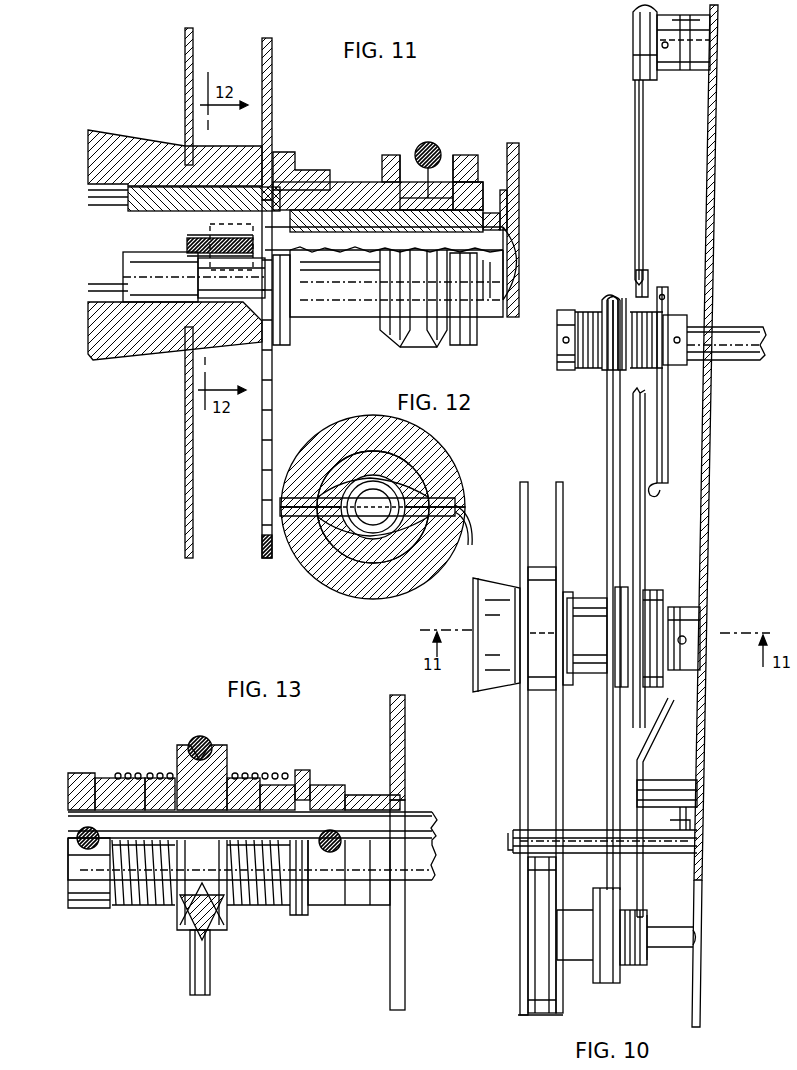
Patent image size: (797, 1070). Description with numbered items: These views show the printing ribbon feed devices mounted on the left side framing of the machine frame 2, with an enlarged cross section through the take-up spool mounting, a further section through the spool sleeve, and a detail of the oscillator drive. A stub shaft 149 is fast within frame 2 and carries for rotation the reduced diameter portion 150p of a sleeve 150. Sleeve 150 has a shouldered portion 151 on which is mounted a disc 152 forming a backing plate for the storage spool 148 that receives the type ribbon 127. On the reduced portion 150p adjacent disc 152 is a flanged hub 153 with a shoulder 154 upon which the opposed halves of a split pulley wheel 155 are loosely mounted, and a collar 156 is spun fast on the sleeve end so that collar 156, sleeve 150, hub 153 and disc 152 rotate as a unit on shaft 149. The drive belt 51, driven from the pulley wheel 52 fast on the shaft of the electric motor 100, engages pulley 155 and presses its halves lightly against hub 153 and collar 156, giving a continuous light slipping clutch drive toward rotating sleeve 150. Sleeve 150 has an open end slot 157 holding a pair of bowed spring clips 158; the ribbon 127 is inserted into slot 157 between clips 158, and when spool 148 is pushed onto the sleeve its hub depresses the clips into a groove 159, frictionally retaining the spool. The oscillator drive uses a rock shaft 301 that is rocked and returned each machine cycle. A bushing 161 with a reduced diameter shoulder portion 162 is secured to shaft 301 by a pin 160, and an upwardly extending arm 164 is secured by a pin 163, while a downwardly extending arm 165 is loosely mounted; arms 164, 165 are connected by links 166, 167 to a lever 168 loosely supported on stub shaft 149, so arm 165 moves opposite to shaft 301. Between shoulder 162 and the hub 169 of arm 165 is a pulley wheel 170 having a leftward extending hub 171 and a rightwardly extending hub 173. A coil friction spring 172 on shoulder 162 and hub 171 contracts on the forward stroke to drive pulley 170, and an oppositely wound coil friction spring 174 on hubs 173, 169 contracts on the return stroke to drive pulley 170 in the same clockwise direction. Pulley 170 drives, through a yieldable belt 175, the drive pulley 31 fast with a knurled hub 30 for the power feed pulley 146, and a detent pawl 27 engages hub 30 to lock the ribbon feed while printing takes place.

In FIG. 11, the machine frame 2 is at (520, 160).
In FIG. 13, the machine frame 2 is at (397, 852).
In FIG. 10, the machine frame 2 is at (703, 895).
In FIG. 10, the detent pawl 27 is at (643, 887).
In FIG. 10, the knurled hub 30 is at (637, 958).
In FIG. 10, the drive pulley 31 is at (597, 968).
In FIG. 11, the drive belt 51 is at (420, 142).
In FIG. 10, the drive belt 51 is at (642, 178).
In FIG. 10, the pulley wheel 52 is at (633, 42).
In FIG. 10, the electric motor 100 is at (708, 44).
In FIG. 12, the type ribbon 127 is at (485, 545).
In FIG. 10, the type ribbon 127 is at (548, 810).
In FIG. 10, the power feed pulley 146 is at (522, 958).
In FIG. 11, the storage spool 148 is at (186, 40).
In FIG. 10, the storage spool 148 is at (540, 462).
In FIG. 11, the stub shaft 149 is at (500, 240).
In FIG. 12, the stub shaft 149 is at (370, 545).
In FIG. 11, the sleeve 150 is at (150, 200).
In FIG. 12, the sleeve 150 is at (405, 468).
In FIG. 10, the sleeve 150 is at (460, 575).
In FIG. 11, the reduced diameter portion 150p is at (325, 215).
In FIG. 11, the shouldered portion 151 is at (283, 150).
In FIG. 11, the disc 152 is at (272, 62).
In FIG. 10, the disc 152 is at (561, 700).
In FIG. 11, the flanged hub 153 is at (378, 180).
In FIG. 10, the flanged hub 153 is at (590, 605).
In FIG. 11, the shoulder 154 is at (470, 188).
In FIG. 11, the split pulley wheel 155 is at (417, 345).
In FIG. 10, the split pulley wheel 155 is at (620, 690).
In FIG. 11, the collar 156 is at (488, 212).
In FIG. 10, the collar 156 is at (655, 683).
In FIG. 11, the open end slot 157 is at (135, 248).
In FIG. 11, the bowed spring clips 158 is at (198, 240).
In FIG. 12, the bowed spring clips 158 is at (420, 490).
In FIG. 11, the groove 159 is at (228, 195).
In FIG. 12, the groove 159 is at (402, 580).
In FIG. 13, the pin 160 is at (90, 826).
In FIG. 10, the pin 160 is at (563, 341).
In FIG. 13, the bushing 161 is at (97, 895).
In FIG. 10, the bushing 161 is at (568, 312).
In FIG. 13, the reduced diameter shoulder portion 162 is at (125, 785).
In FIG. 10, the reduced diameter shoulder portion 162 is at (585, 310).
In FIG. 13, the pin 163 is at (332, 830).
In FIG. 10, the pin 163 is at (678, 330).
In FIG. 13, the upwardly extending arm 164 is at (312, 770).
In FIG. 13, the downwardly extending arm 165 is at (320, 790).
In FIG. 10, the link 166 is at (668, 452).
In FIG. 10, the link 167 is at (655, 488).
In FIG. 10, the lever 168 is at (685, 620).
In FIG. 13, the hub 169 is at (272, 790).
In FIG. 13, the pulley wheel 170 is at (220, 935).
In FIG. 10, the pulley wheel 170 is at (610, 300).
In FIG. 13, the leftward extending hub 171 is at (160, 790).
In FIG. 13, the coil friction spring 172 is at (162, 905).
In FIG. 10, the coil friction spring 172 is at (592, 370).
In FIG. 13, the rightwardly extending hub 173 is at (238, 790).
In FIG. 13, the coil friction spring 174 is at (280, 905).
In FIG. 10, the coil friction spring 174 is at (642, 370).
In FIG. 13, the yieldable belt 175 is at (195, 735).
In FIG. 10, the yieldable belt 175 is at (608, 410).
In FIG. 13, the rock shaft 301 is at (415, 825).
In FIG. 10, the rock shaft 301 is at (745, 335).